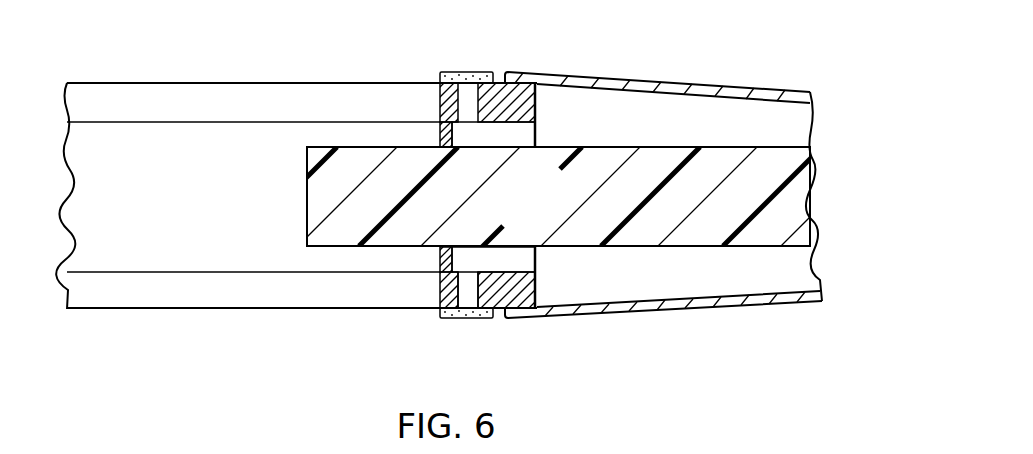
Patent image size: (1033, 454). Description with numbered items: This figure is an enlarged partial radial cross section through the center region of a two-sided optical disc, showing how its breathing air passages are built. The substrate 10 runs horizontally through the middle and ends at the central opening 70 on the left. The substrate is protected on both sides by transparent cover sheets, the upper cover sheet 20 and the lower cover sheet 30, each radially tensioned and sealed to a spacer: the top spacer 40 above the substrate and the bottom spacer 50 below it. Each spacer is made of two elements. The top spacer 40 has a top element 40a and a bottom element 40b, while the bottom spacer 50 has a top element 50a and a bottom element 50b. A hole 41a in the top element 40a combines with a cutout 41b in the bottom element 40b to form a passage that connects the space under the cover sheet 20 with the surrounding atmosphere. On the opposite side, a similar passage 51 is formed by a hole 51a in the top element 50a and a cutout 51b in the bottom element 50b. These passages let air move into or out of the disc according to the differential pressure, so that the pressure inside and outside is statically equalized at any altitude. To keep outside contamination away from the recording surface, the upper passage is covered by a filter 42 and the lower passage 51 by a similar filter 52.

The substrate 10 is at (797, 191).
The cover sheet 20 is at (707, 82).
The cover sheet 30 is at (747, 307).
The top spacer 40 is at (540, 115).
The top element of top spacer 40a is at (447, 100).
The bottom element of top spacer 40b is at (447, 132).
The hole 41a is at (472, 102).
The cutout 41b is at (517, 137).
The filter 42 is at (440, 72).
The bottom spacer 50 is at (547, 290).
The top element of bottom spacer 50a is at (437, 293).
The bottom element of bottom spacer 50b is at (436, 263).
The air passage 51 is at (467, 275).
The hole 51a is at (468, 299).
The cutout 51b is at (538, 258).
The filter 52 is at (467, 318).
The central opening 70 is at (233, 230).